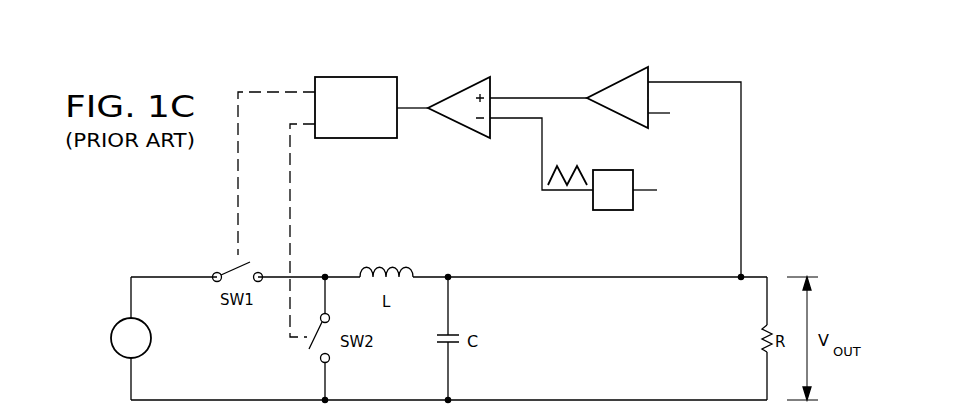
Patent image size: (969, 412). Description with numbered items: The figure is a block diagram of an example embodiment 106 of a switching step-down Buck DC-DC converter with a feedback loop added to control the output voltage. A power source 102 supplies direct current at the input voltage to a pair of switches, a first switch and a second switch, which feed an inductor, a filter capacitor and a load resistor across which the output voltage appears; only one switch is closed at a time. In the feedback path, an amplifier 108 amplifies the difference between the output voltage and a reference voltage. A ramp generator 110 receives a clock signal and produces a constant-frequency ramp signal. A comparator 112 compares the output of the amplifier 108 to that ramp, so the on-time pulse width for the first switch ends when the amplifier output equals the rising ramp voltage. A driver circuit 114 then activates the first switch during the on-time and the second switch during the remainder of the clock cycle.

The power source 102 is at (111, 338).
The example embodiment of the DC-DC converter circuit 106 is at (242, 63).
The amplifier 108 is at (618, 80).
The ramp generator 110 is at (619, 210).
The comparator 112 is at (457, 90).
The driver circuit 114 is at (355, 77).